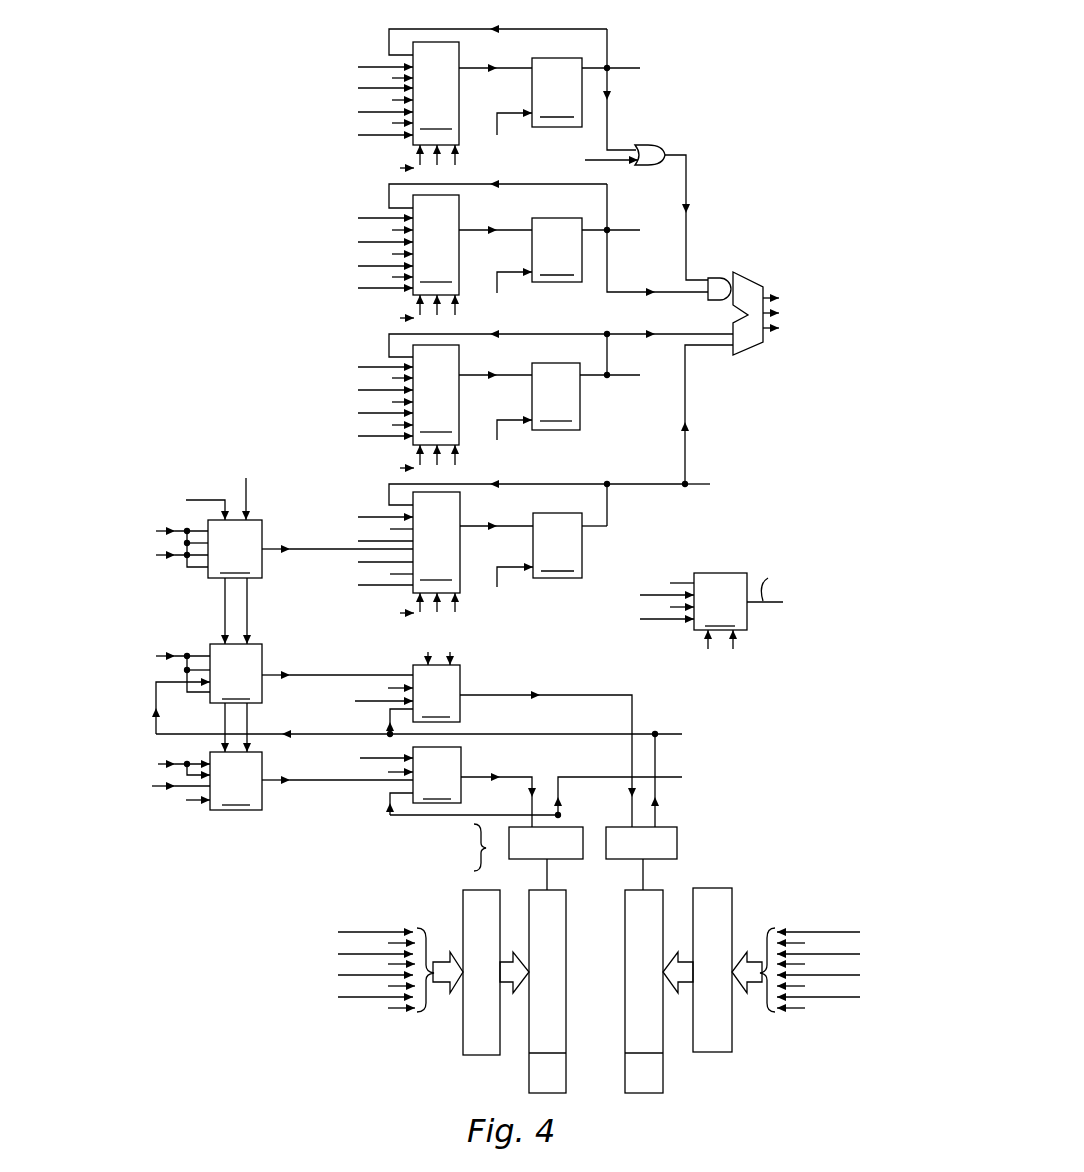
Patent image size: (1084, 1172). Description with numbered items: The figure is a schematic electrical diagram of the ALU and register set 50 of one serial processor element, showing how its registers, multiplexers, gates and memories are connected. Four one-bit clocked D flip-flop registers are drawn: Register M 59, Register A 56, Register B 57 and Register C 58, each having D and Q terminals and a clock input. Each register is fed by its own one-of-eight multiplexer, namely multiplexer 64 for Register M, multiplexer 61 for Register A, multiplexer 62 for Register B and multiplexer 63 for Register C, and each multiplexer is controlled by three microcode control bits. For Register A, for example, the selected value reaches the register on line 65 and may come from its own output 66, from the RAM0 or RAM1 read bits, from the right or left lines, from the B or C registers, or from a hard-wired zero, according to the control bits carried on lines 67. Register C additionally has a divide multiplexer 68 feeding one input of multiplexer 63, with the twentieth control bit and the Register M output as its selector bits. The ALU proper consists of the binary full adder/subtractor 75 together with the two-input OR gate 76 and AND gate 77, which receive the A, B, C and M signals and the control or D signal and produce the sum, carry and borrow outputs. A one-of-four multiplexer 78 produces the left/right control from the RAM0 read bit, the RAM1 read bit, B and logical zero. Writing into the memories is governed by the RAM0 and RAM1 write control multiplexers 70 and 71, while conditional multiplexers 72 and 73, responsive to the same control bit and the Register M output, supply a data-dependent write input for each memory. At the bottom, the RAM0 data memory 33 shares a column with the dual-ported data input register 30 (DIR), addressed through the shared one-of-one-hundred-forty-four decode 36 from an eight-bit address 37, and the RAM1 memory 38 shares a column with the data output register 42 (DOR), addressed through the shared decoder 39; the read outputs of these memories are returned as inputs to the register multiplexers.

The ALU and register set 50 is at (293, 62).
The multiplexer 64 is at (436, 93).
The Register M 59 is at (557, 84).
The OR gate 76 is at (654, 147).
The input line 65 is at (477, 229).
The output 66 is at (598, 229).
The control lines 67 is at (460, 309).
The multiplexer 61 is at (436, 245).
The Register A 56 is at (557, 241).
The AND gate 77 is at (712, 300).
The binary full adder/subtractor 75 is at (750, 348).
The multiplexer 62 is at (436, 395).
The Register B 57 is at (556, 387).
The divide multiplexer 68 is at (235, 549).
The multiplexer 63 is at (436, 542).
The Register C 58 is at (557, 536).
The multiplexer 78 is at (720, 601).
The conditional multiplexer 72 is at (236, 673).
The RAM0 write control multiplexer 70 is at (436, 693).
The conditional multiplexer 73 is at (236, 781).
The RAM1 write control multiplexer 71 is at (437, 775).
The address 37 is at (441, 958).
The 1-of-144 decode 36 is at (463, 1036).
The data memory 33 is at (567, 920).
The data input register 30 is at (529, 1080).
The dynamic memory 38 is at (625, 970).
The data output register 42 is at (663, 1073).
The decoder 39 is at (732, 1032).